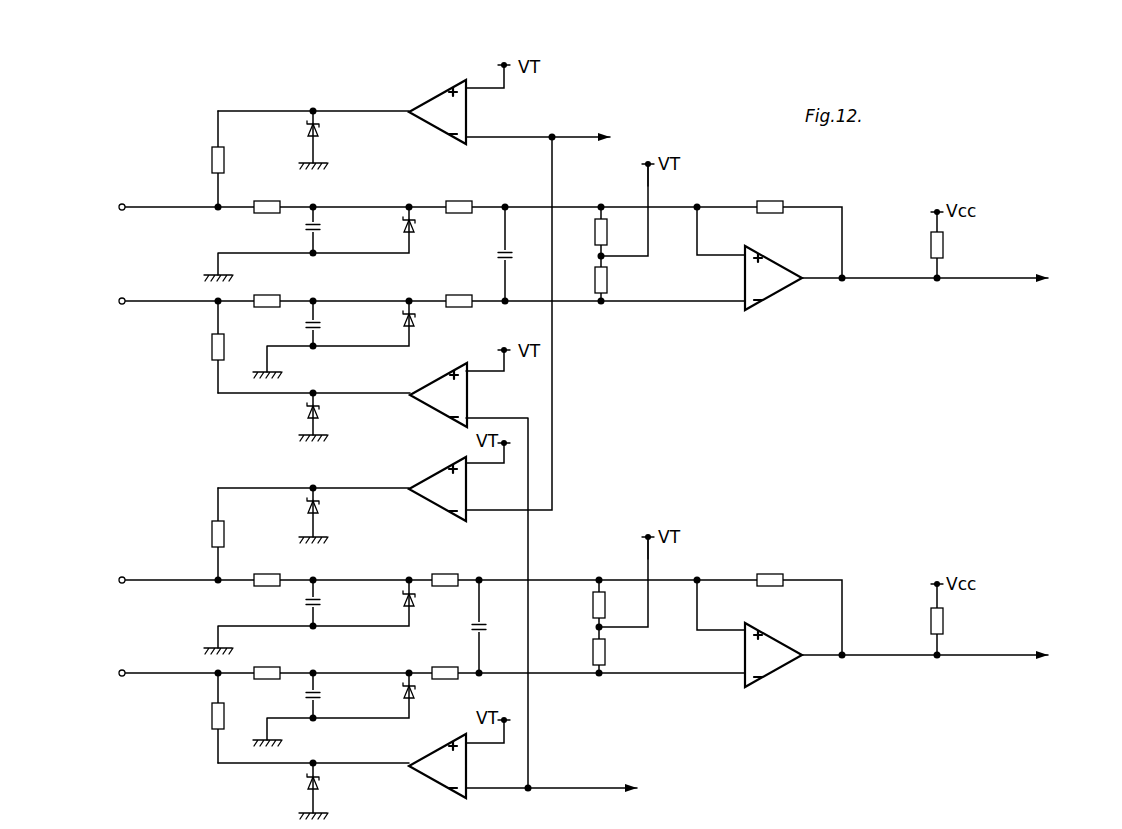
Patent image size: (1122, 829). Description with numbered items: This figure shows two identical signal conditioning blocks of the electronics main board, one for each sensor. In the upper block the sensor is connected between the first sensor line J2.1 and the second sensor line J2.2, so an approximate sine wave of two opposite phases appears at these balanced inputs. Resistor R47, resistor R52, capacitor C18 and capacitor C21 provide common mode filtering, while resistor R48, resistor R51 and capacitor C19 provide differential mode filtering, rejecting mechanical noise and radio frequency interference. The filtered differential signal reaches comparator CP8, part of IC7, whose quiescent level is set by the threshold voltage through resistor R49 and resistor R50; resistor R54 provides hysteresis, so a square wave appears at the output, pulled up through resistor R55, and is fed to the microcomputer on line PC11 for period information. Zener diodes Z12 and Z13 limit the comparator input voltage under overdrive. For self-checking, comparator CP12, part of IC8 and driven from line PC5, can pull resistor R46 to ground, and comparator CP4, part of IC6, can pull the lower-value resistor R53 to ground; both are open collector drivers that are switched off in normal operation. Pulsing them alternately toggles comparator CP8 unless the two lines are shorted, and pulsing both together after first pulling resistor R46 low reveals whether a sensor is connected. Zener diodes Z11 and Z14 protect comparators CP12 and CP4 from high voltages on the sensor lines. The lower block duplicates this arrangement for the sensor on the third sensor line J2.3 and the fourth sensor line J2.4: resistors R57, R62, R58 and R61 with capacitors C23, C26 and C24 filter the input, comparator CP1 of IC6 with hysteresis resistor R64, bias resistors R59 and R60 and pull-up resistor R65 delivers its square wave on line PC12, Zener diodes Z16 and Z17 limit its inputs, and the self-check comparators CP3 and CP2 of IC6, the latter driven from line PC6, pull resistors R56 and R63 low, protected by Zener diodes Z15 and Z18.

The sensor connection J2 line 1 J2.1 is at (105, 207).
The sensor connection J2 line 2 J2.2 is at (105, 301).
The sensor connection J2 line 3 J2.3 is at (105, 580).
The sensor connection J2 line 4 J2.4 is at (105, 673).
The microcomputer output line PC5 is at (622, 137).
The microcomputer output line PC6 is at (649, 789).
The microcomputer input line PC11 is at (1066, 278).
The microcomputer input line PC12 is at (1066, 655).
The resistor R46 is at (236, 160).
The resistor R47 is at (266, 197).
The resistor R48 is at (459, 197).
The resistor R49 is at (618, 232).
The resistor R50 is at (618, 280).
The resistor R51 is at (459, 291).
The resistor R52 is at (266, 291).
The resistor R53 is at (200, 347).
The resistor R54 is at (768, 197).
The resistor R55 is at (955, 245).
The resistor R56 is at (200, 534).
The resistor R57 is at (266, 570).
The resistor R58 is at (446, 570).
The resistor R59 is at (580, 605).
The resistor R60 is at (580, 652).
The resistor R61 is at (446, 663).
The resistor R62 is at (266, 663).
The resistor R63 is at (200, 716).
The resistor R64 is at (768, 570).
The resistor R65 is at (955, 621).
The capacitor C18 is at (298, 231).
The capacitor C19 is at (521, 256).
The capacitor C21 is at (298, 325).
The capacitor C23 is at (297, 605).
The capacitor C24 is at (461, 628).
The capacitor C26 is at (297, 697).
The Zener diode Z11 is at (331, 131).
The Zener diode Z12 is at (393, 227).
The Zener diode Z13 is at (393, 320).
The Zener diode Z14 is at (294, 409).
The Zener diode Z15 is at (293, 502).
The Zener diode Z16 is at (392, 600).
The Zener diode Z17 is at (392, 692).
The Zener diode Z18 is at (292, 780).
The integrated circuit IC6 is at (602, 578).
The integrated circuit IC7 is at (774, 281).
The integrated circuit IC8 is at (458, 110).
The comparator CP1 is at (774, 641).
The comparator CP2 is at (439, 773).
The comparator CP3 is at (448, 510).
The comparator CP4 is at (462, 396).
The comparator CP8 is at (774, 264).
The comparator CP12 is at (464, 118).